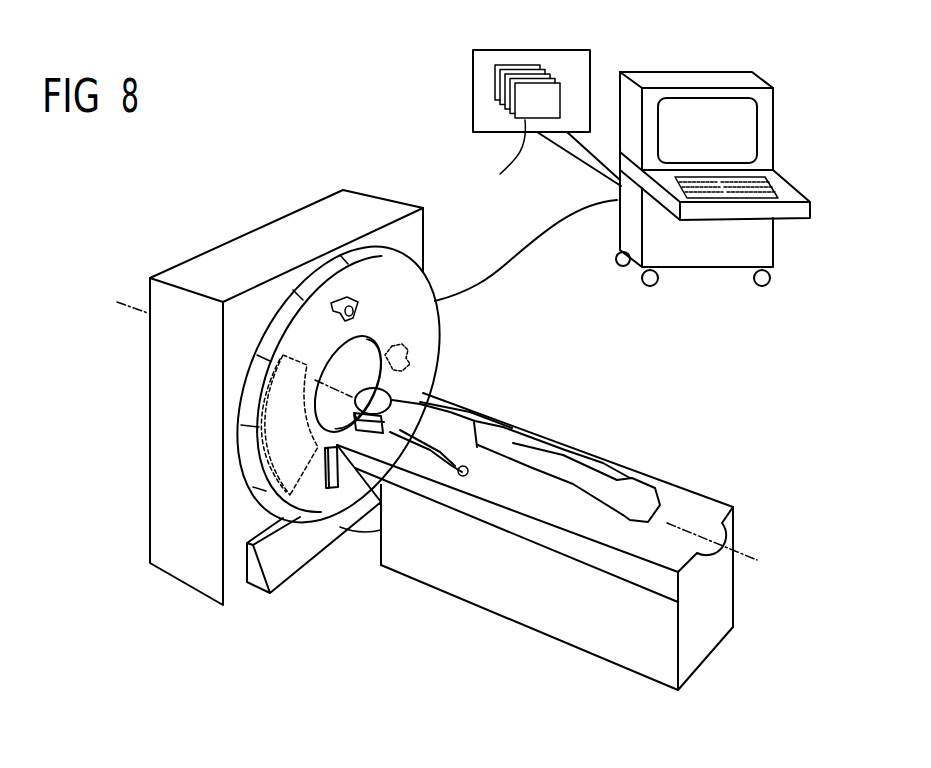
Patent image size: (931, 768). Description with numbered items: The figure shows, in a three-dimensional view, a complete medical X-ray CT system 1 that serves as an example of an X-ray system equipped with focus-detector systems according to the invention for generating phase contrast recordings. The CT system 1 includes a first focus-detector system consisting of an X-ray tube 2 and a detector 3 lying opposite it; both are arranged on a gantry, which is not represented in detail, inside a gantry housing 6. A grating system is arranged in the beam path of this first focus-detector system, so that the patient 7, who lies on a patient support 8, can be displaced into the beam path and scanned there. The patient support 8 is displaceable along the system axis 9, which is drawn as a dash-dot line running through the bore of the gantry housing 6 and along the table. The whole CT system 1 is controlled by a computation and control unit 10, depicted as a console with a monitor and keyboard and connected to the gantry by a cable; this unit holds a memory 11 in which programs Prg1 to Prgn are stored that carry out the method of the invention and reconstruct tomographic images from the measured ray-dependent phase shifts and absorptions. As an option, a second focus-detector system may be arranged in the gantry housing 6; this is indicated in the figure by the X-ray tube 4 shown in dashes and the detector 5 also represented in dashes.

The CT system 1 is at (158, 220).
The X-ray tube 2 is at (362, 302).
The detector 3 is at (340, 474).
The X-ray tube 4 is at (410, 357).
The detector 5 is at (298, 457).
The gantry housing 6 is at (187, 572).
The patient 7 is at (457, 425).
The patient support 8 is at (497, 593).
The system axis 9 is at (749, 552).
The computation and control unit 10 is at (773, 130).
The memory 11 is at (519, 50).